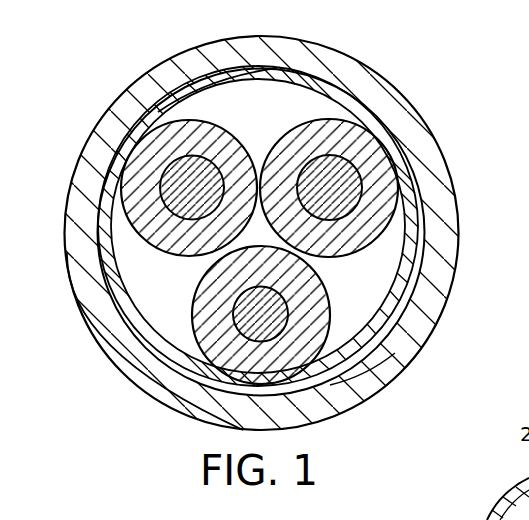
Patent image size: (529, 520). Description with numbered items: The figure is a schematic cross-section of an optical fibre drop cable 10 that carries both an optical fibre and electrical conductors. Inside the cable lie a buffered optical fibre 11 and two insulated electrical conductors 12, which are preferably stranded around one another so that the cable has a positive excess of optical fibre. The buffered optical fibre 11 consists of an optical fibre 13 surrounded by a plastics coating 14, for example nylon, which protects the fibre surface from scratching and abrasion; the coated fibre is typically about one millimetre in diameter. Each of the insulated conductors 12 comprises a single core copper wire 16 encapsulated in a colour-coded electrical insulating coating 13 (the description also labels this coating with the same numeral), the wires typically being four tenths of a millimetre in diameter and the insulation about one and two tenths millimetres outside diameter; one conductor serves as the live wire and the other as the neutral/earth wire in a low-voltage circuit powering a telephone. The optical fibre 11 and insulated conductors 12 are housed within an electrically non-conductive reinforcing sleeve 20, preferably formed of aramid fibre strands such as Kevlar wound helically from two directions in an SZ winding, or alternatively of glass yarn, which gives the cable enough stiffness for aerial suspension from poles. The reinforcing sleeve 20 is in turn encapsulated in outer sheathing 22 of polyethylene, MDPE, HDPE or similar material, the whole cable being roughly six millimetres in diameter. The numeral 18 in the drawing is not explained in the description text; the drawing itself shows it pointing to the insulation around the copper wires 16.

The optical fibre drop cable 10 is at (428, 103).
The buffered optical fibre 11 is at (185, 327).
The insulated electrical conductors 12 is at (231, 123).
The optical fibre 13 is at (377, 388).
The plastics coating 14 is at (200, 350).
The single core copper wires 16 is at (167, 185).
The insulation 18 is at (138, 207).
The reinforcing sleeve 20 is at (418, 340).
The sheathing 22 is at (160, 78).